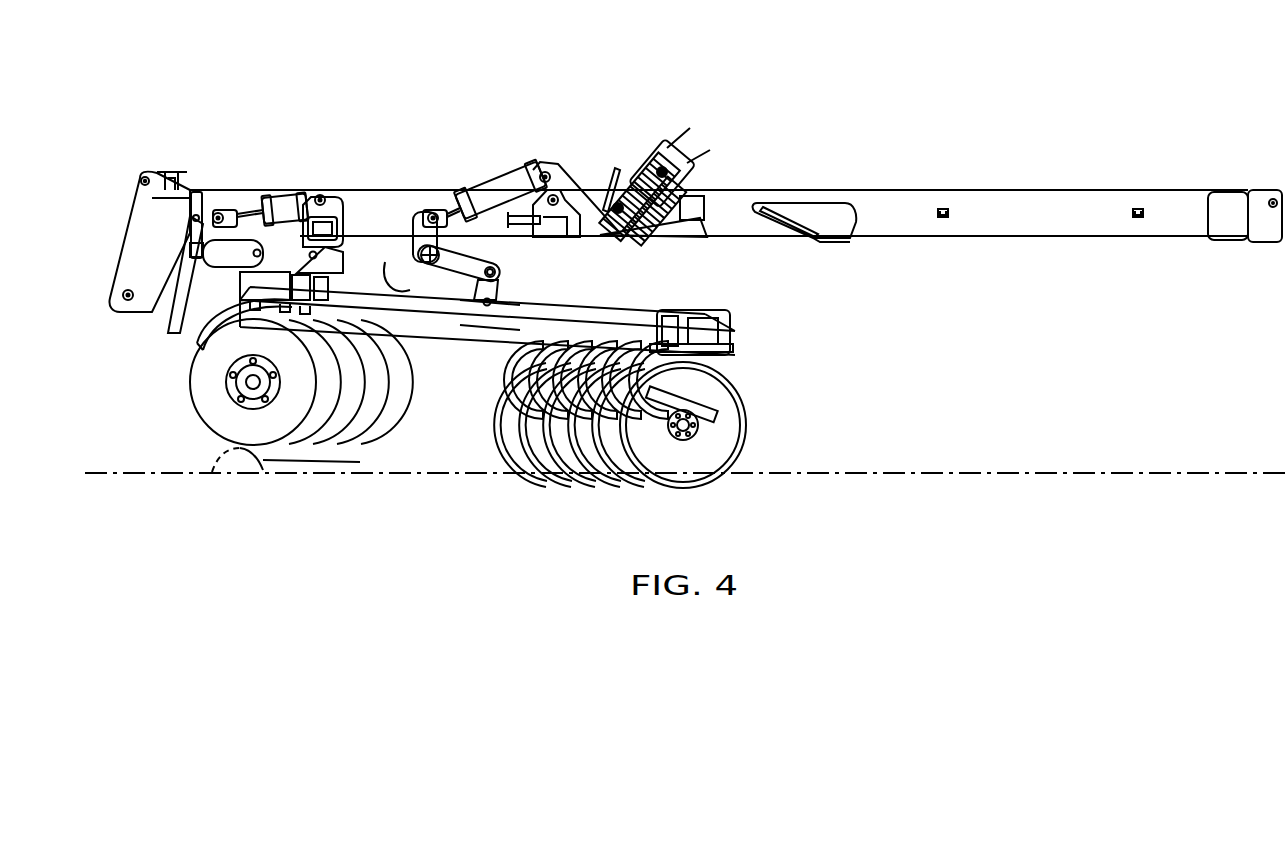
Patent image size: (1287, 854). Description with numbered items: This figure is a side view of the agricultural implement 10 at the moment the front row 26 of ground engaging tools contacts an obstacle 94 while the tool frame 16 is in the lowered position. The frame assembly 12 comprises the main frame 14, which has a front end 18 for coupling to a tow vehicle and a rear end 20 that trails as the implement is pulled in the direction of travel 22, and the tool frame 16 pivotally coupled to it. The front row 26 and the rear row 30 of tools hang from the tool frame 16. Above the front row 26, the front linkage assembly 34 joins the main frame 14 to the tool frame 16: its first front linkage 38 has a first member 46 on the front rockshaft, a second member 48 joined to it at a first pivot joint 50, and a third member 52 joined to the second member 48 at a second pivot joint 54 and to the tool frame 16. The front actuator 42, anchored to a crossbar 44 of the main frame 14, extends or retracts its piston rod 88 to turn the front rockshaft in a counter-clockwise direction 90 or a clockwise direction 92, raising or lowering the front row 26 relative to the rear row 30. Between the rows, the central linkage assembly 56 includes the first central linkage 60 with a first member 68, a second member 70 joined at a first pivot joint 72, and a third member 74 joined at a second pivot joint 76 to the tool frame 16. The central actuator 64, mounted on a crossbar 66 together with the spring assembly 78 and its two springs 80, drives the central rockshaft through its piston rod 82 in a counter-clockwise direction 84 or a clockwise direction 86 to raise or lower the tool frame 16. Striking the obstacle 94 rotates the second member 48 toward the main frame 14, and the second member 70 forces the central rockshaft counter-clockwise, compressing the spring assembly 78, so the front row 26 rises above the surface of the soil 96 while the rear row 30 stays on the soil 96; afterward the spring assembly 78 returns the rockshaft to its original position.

The agricultural implement 10 is at (1148, 56).
The frame assembly 12 is at (147, 176).
The main frame 14 is at (737, 192).
The tool frame 16 is at (518, 344).
The front end 18 is at (158, 172).
The rear end 20 is at (1260, 196).
The direction of travel 22 is at (116, 211).
The front row 26 is at (285, 420).
The rear row 30 is at (652, 445).
The front linkage assembly 34 is at (294, 166).
The first front linkage 38 is at (170, 318).
The front actuator 42 is at (269, 158).
The crossbar 44 is at (348, 185).
The first member 46 is at (197, 290).
The second member 48 is at (280, 196).
The first pivot joint 50 is at (254, 250).
The third member 52 is at (337, 253).
The second pivot joint 54 is at (340, 228).
The central linkage assembly 56 is at (500, 171).
The first central linkage 60 is at (422, 213).
The central actuator 64 is at (486, 166).
The crossbar 66 is at (568, 200).
The first member 68 is at (462, 276).
The second member 70 is at (494, 290).
The first pivot joint 72 is at (496, 268).
The third member 74 is at (502, 314).
The second pivot joint 76 is at (485, 306).
The spring assembly 78 is at (688, 175).
The springs 80 is at (640, 170).
The piston rod 82 is at (458, 200).
The counter-clockwise direction 84 is at (392, 222).
The clockwise direction 86 is at (384, 208).
The piston rod 88 is at (240, 213).
The counter-clockwise direction 90 is at (198, 192).
The clockwise direction 92 is at (170, 172).
The obstacle 94 is at (232, 475).
The soil 96 is at (900, 478).